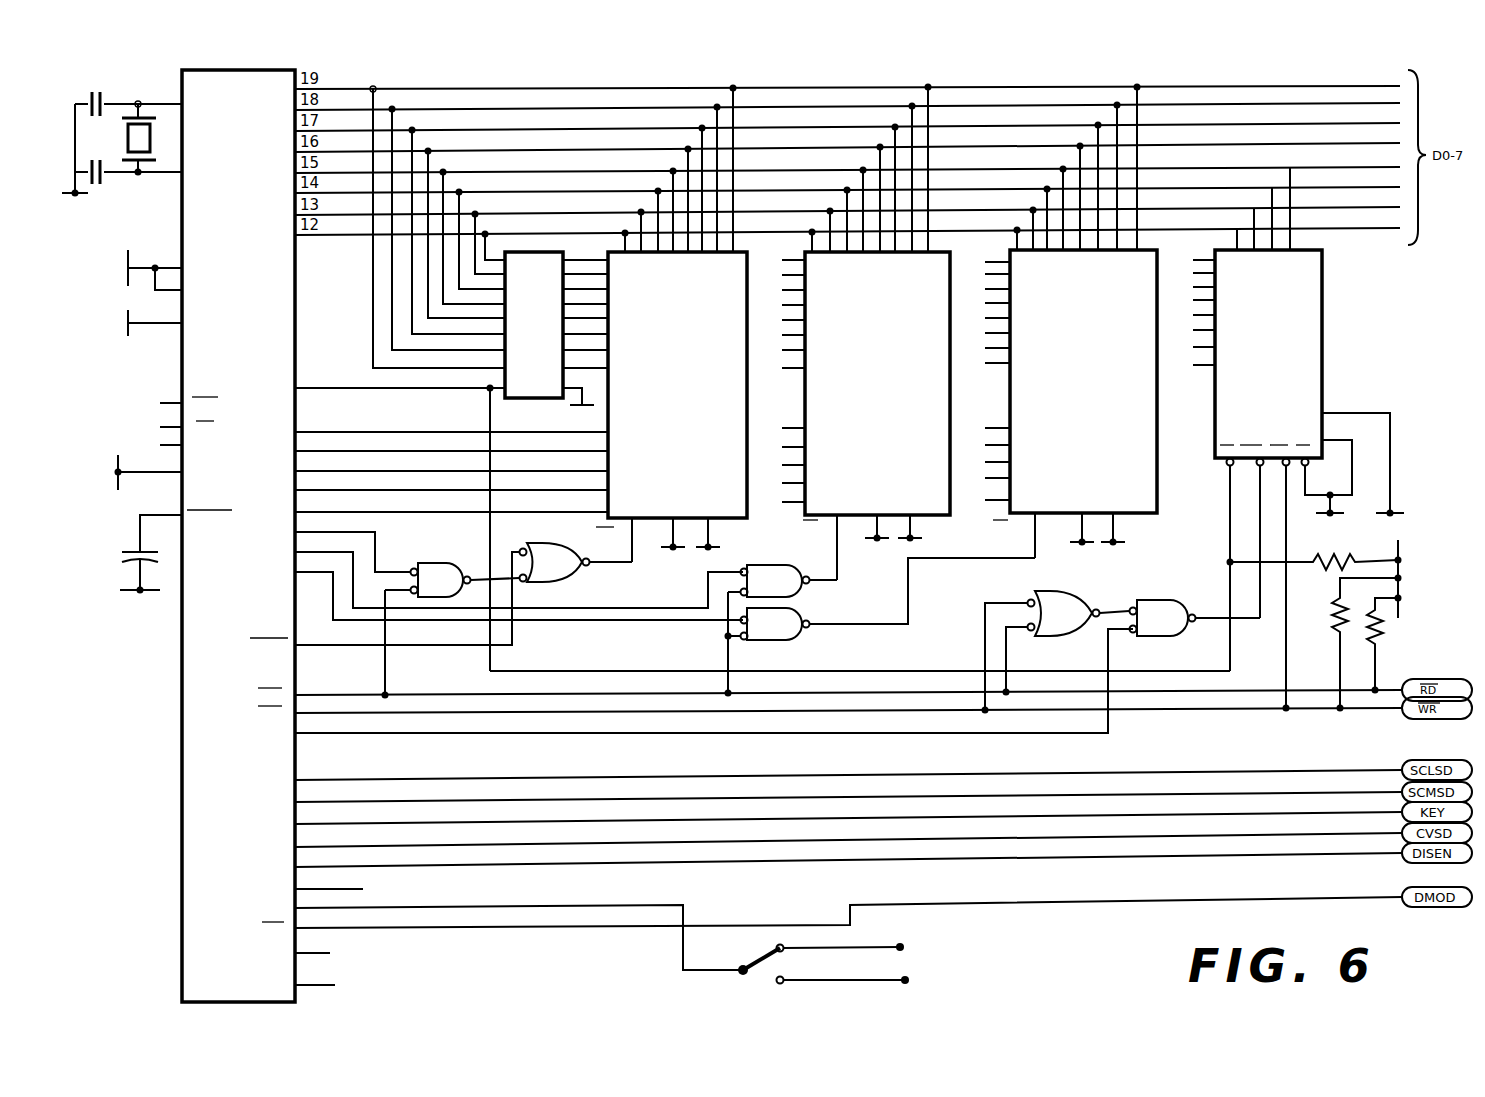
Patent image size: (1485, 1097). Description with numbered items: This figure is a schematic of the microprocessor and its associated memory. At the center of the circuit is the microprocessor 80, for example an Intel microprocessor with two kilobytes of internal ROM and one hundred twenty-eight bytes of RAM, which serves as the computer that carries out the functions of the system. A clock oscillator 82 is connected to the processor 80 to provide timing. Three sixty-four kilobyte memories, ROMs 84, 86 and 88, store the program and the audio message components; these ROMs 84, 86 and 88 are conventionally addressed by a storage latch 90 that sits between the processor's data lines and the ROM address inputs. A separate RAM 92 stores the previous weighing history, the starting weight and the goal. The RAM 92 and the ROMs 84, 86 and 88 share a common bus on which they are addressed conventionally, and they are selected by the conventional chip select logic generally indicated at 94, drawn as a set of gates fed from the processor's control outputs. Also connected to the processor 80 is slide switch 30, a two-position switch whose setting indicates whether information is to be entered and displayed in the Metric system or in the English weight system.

The slide switch 30 is at (768, 955).
The microprocessor 80 is at (200, 683).
The clock oscillator 82 is at (150, 170).
The 64K ROM 84 is at (694, 309).
The 64K ROM 86 is at (897, 296).
The 64K ROM 88 is at (1100, 297).
The storage latch 90 is at (500, 400).
The RAM 92 is at (1298, 326).
The chip select logic 94 is at (632, 633).